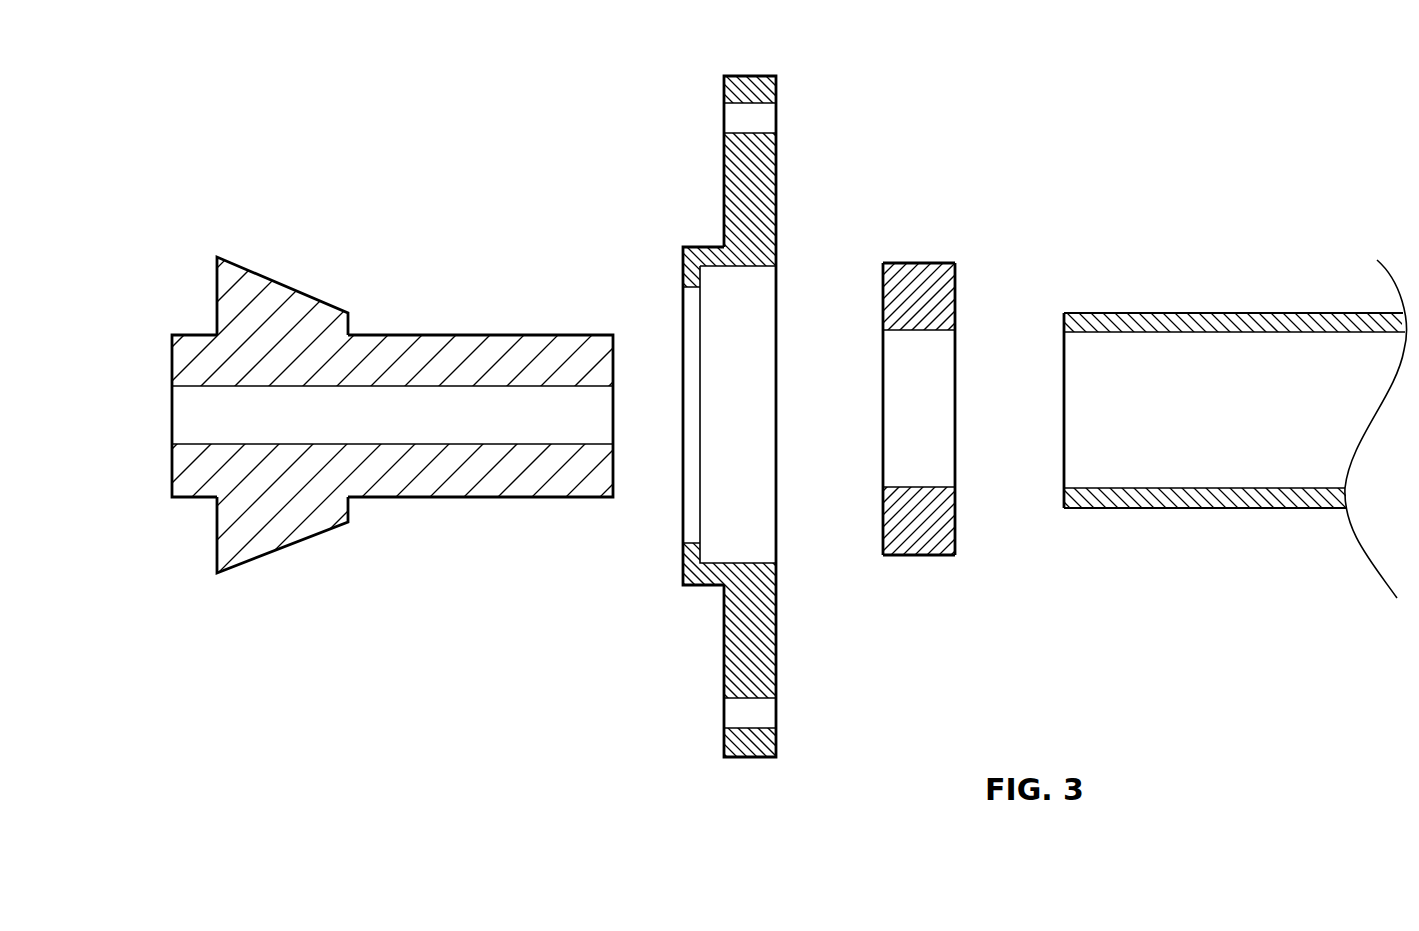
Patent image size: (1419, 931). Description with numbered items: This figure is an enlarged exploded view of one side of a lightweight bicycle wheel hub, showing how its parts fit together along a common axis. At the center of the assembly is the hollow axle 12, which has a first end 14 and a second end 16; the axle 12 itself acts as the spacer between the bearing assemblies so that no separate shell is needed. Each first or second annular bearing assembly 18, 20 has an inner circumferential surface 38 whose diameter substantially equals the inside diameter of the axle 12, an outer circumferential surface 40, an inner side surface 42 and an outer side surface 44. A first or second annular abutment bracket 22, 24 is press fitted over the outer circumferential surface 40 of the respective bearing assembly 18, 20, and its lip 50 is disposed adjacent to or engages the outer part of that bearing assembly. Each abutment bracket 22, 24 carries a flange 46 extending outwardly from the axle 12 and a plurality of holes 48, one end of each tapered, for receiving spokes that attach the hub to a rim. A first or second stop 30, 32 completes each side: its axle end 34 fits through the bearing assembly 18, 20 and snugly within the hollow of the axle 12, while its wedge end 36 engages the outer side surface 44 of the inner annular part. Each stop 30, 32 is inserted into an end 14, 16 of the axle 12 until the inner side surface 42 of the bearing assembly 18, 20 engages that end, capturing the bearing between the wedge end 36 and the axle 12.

The axle 12 is at (1139, 394).
The first end 14 is at (1139, 366).
The second end 16 is at (1080, 323).
The first annular bearing assembly 18 is at (916, 361).
The second annular bearing assembly 20 is at (916, 361).
The first annular abutment bracket 22 is at (709, 401).
The second annular abutment bracket 24 is at (709, 401).
The first stop 30 is at (474, 395).
The second stop 32 is at (474, 395).
The axle end 34 is at (485, 352).
The wedge end 36 is at (290, 310).
The inner circumferential surface 38 is at (913, 332).
The outer circumferential surface 40 is at (950, 262).
The inner side surface 42 is at (957, 295).
The outer side surface 44 is at (883, 293).
The flange 46 is at (740, 165).
The holes 48 is at (757, 117).
The lip 50 is at (687, 267).